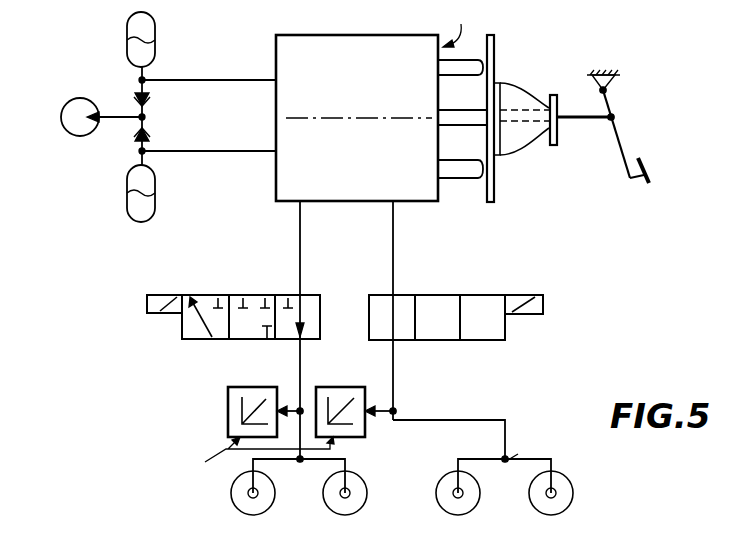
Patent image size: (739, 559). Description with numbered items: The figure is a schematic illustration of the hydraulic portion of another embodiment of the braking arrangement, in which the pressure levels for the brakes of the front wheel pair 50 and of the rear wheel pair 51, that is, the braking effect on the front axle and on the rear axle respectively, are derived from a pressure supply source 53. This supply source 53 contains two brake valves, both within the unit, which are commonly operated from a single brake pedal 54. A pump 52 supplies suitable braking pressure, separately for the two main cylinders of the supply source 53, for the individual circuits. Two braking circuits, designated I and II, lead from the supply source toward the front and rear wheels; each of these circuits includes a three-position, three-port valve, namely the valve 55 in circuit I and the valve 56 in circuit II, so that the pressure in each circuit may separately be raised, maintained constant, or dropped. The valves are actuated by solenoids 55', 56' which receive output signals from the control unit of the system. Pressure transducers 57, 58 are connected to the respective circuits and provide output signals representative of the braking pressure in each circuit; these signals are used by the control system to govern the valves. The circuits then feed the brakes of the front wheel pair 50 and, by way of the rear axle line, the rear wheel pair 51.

The front wheel pair 50 is at (328, 502).
The rear wheel pair 51 is at (538, 500).
The pump 52 is at (105, 92).
The pressure supply source 53 is at (289, 51).
The brake pedal 54 is at (621, 143).
The 3/3 valve 55 is at (251, 296).
The solenoid 55' is at (140, 330).
The 3/3 valve 56 is at (437, 296).
The solenoid 56' is at (546, 331).
The pressure transducer 57 is at (227, 419).
The pressure transducer 58 is at (342, 387).